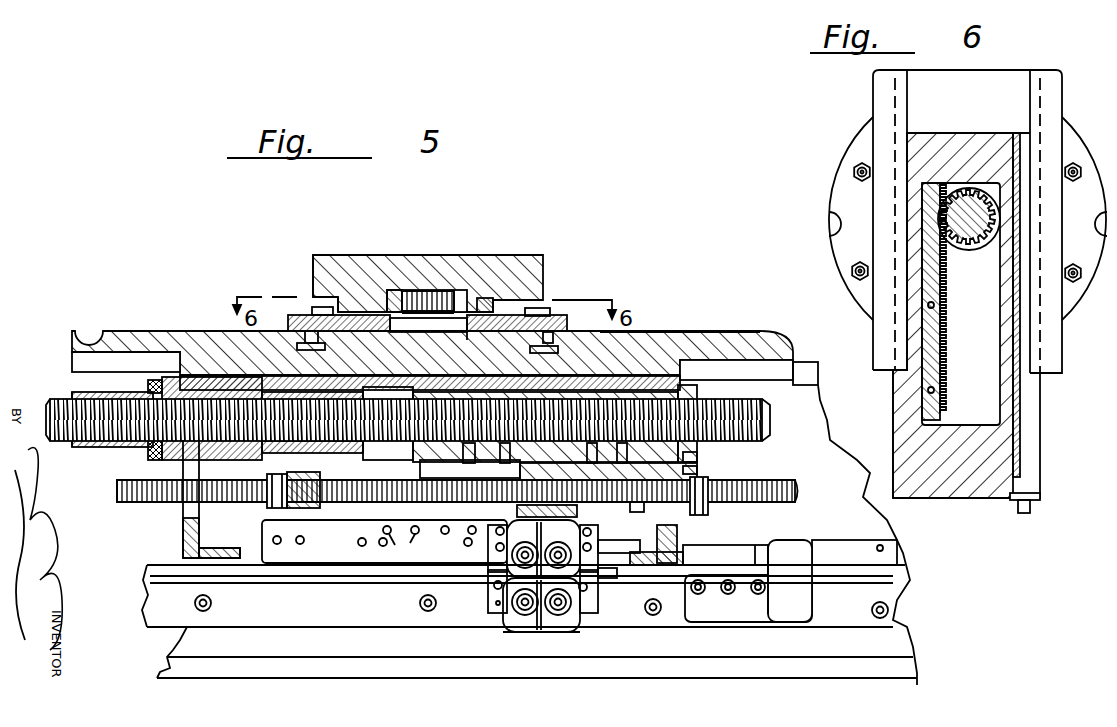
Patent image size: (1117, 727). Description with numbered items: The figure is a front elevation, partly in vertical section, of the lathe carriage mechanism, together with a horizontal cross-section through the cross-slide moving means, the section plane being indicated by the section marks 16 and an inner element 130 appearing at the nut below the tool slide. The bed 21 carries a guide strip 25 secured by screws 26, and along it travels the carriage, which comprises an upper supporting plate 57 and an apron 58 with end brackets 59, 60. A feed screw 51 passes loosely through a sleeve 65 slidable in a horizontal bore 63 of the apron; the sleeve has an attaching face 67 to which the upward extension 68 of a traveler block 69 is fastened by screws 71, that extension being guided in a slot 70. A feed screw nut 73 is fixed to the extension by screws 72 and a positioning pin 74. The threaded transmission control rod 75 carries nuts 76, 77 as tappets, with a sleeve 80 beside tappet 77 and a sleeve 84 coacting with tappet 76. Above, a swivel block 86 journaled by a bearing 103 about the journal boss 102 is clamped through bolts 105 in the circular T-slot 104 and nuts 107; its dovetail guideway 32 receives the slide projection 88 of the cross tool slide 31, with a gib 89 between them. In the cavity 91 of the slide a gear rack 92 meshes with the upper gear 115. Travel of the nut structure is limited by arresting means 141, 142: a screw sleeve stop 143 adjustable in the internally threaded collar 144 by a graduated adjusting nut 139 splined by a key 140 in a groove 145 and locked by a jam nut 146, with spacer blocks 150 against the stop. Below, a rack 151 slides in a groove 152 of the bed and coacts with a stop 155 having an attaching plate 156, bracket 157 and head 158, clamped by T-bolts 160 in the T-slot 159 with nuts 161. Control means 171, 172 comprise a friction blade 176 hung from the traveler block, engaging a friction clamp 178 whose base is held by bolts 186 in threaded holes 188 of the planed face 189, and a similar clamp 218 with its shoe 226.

In FIG. 5, the carriage 16 is at (273, 372).
In FIG. 5, the bed 21 is at (820, 420).
In FIG. 5, the guide strip 25 is at (290, 620).
In FIG. 5, the screws 26 is at (437, 609).
In FIG. 5, the cross tool slide 31 is at (523, 258).
In FIG. 6, the cross tool slide 31 is at (983, 497).
In FIG. 5, the guideway 32 is at (360, 268).
In FIG. 6, the guideway 32 is at (907, 107).
In FIG. 5, the feed screw 51 is at (766, 428).
In FIG. 5, the upper supporting plate 57 is at (663, 337).
In FIG. 5, the apron 58 is at (617, 380).
In FIG. 5, the end bracket 59 is at (183, 536).
In FIG. 5, the end bracket 60 is at (672, 534).
In FIG. 5, the horizontal bore 63 is at (410, 390).
In FIG. 5, the sleeve 65 is at (455, 392).
In FIG. 5, the attaching face 67 is at (467, 466).
In FIG. 5, the upward extension 68 is at (693, 461).
In FIG. 5, the traveler block 69 is at (523, 476).
In FIG. 5, the slot 70 is at (378, 458).
In FIG. 5, the screws 71 is at (474, 472).
In FIG. 5, the screws 72 is at (693, 471).
In FIG. 5, the feed screw nut 73 is at (697, 397).
In FIG. 5, the positioning pin 74 is at (637, 506).
In FIG. 5, the transmission control rod 75 is at (797, 502).
In FIG. 5, the nut 76 is at (280, 510).
In FIG. 5, the nut 77 is at (695, 515).
In FIG. 5, the sleeve 80 is at (603, 512).
In FIG. 5, the sleeve 84 is at (312, 468).
In FIG. 5, the swivel block 86 is at (567, 323).
In FIG. 6, the swivel block 86 is at (863, 302).
In FIG. 5, the slide projection 88 is at (370, 292).
In FIG. 6, the slide projection 88 is at (901, 407).
In FIG. 5, the gib 89 is at (482, 298).
In FIG. 6, the gib 89 is at (1025, 421).
In FIG. 5, the longitudinal depression or cavity 91 is at (428, 290).
In FIG. 6, the longitudinal depression or cavity 91 is at (988, 397).
In FIG. 5, the gear rack 92 is at (396, 290).
In FIG. 6, the gear rack 92 is at (942, 366).
In FIG. 5, the journal boss 102 is at (407, 328).
In FIG. 5, the bearing 103 is at (463, 328).
In FIG. 5, the circular T-slot 104 is at (548, 353).
In FIG. 6, the bolts 105 is at (855, 269).
In FIG. 6, the nuts 107 is at (853, 273).
In FIG. 5, the upper gear 115 is at (458, 290).
In FIG. 6, the upper gear 115 is at (969, 250).
In FIG. 5, the nut 130 is at (428, 325).
In FIG. 5, the graduated adjusting nut 139 is at (178, 460).
In FIG. 5, the key 140 is at (152, 448).
In FIG. 5, the arresting means 141 is at (116, 447).
In FIG. 5, the arresting means 142 is at (700, 412).
In FIG. 5, the screw sleeve stop 143 is at (80, 397).
In FIG. 5, the internally threaded collar 144 is at (193, 376).
In FIG. 5, the groove 145 is at (124, 447).
In FIG. 5, the jam nut 146 is at (148, 386).
In FIG. 5, the spacer blocks 150 is at (305, 394).
In FIG. 5, the rack 151 is at (680, 557).
In FIG. 5, the groove 152 is at (872, 547).
In FIG. 5, the stop 155 is at (803, 537).
In FIG. 5, the attaching plate 156 is at (723, 613).
In FIG. 5, the bracket 157 is at (812, 559).
In FIG. 5, the head 158 is at (755, 544).
In FIG. 5, the T-slot 159 is at (827, 591).
In FIG. 5, the T-bolts 160 is at (762, 591).
In FIG. 5, the nuts 161 is at (764, 588).
In FIG. 5, the control means 171 is at (500, 557).
In FIG. 5, the control means 172 is at (503, 623).
In FIG. 5, the friction blade 176 is at (603, 541).
In FIG. 5, the friction clamp 178 is at (607, 574).
In FIG. 5, the bolts 186 is at (495, 535).
In FIG. 5, the threaded holes 188 is at (386, 540).
In FIG. 5, the planed face 189 is at (373, 528).
In FIG. 5, the clamp 218 is at (578, 623).
In FIG. 5, the shoe 226 is at (507, 603).